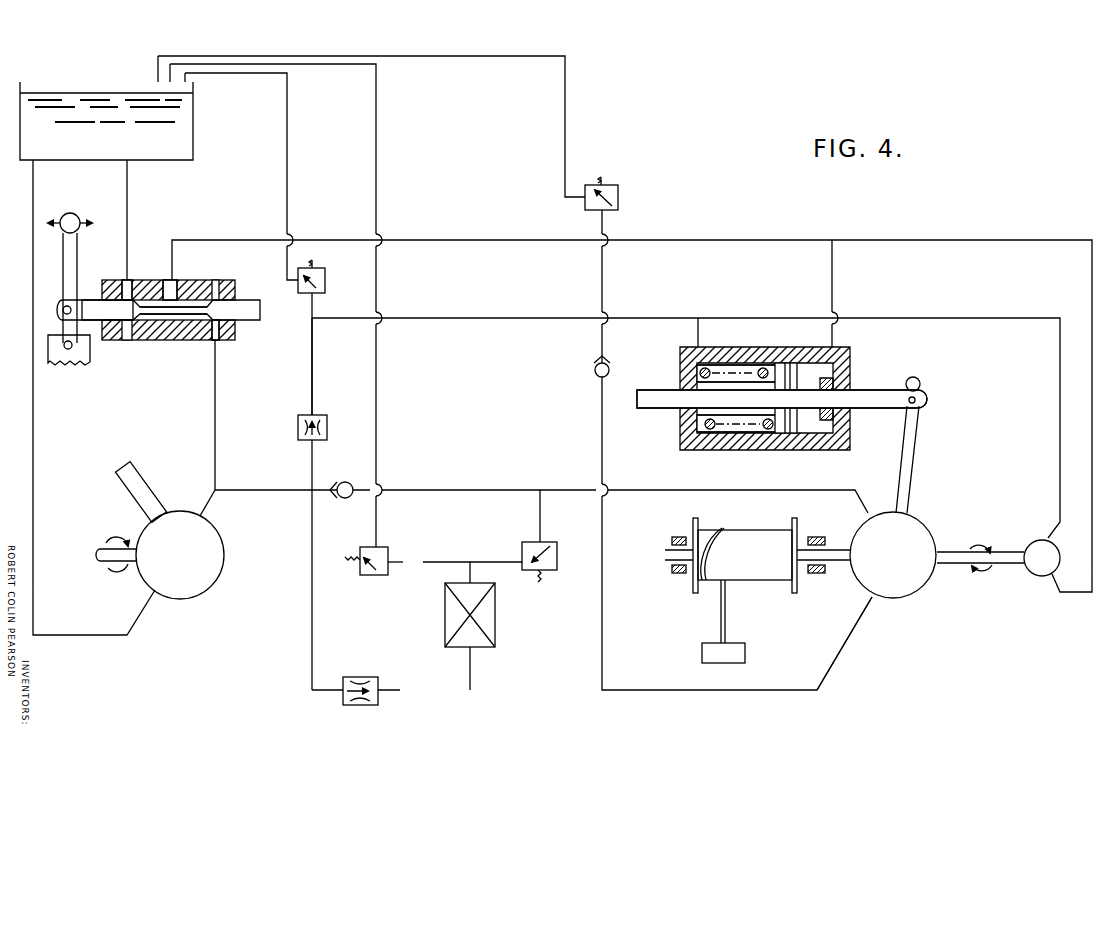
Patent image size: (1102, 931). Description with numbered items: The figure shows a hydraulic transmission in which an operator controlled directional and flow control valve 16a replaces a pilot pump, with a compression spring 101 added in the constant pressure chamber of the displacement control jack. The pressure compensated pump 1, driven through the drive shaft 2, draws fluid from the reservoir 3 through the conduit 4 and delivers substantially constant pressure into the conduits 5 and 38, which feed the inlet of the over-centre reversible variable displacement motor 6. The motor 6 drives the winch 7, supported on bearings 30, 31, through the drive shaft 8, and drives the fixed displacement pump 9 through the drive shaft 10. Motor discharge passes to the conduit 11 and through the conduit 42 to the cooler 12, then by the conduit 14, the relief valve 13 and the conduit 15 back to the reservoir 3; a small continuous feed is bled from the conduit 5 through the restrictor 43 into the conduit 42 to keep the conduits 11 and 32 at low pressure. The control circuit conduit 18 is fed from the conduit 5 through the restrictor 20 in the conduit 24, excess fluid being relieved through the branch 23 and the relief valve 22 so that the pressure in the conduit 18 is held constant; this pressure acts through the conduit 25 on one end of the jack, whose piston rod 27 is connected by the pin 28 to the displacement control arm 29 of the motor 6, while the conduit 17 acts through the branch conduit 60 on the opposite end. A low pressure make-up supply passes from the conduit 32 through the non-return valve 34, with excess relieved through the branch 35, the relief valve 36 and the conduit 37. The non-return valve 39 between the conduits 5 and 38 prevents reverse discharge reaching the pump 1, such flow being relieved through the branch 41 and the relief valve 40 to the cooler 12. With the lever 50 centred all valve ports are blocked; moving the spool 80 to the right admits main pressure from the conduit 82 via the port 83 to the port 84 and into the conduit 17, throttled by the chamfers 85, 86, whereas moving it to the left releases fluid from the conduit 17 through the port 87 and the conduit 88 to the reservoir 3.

The pump 1 is at (205, 572).
The drive shaft 2 is at (100, 548).
The reservoir 3 is at (194, 133).
The conduit 4 is at (34, 436).
The conduit 5 is at (262, 489).
The variable displacement motor 6 is at (928, 533).
The winch 7 is at (748, 540).
The drive shaft 8 is at (838, 566).
The pump 9 is at (1036, 574).
The drive shaft 10 is at (1004, 551).
The conduit 11 is at (838, 653).
The cooler 12 is at (496, 626).
The relief valve 13 is at (382, 578).
The conduit 14 is at (448, 546).
The conduit 15 is at (377, 372).
The directional and flow control valve 16a is at (220, 282).
The conduit 17 is at (1000, 243).
The conduit 18 is at (447, 318).
The restrictor 20 is at (297, 428).
The relief valve 22 is at (326, 279).
The branch 23 is at (313, 306).
The conduit 24 is at (313, 373).
The conduit 25 is at (697, 332).
The piston rod 27 is at (866, 395).
The pin 28 is at (920, 392).
The displacement control arm 29 is at (912, 462).
The bearing 30 is at (676, 536).
The bearing 31 is at (813, 537).
The conduit 32 is at (603, 636).
The non-return valve 34 is at (594, 370).
The branch 35 is at (603, 222).
The relief valve 36 is at (619, 193).
The conduit 37 is at (566, 140).
The conduit 38 is at (428, 492).
The non-return valve 39 is at (346, 499).
The relief valve 40 is at (546, 566).
The branch 41 is at (541, 516).
The conduit 42 is at (471, 668).
The restrictor 43 is at (368, 665).
The lever 50 is at (78, 216).
The branch conduit 60 is at (834, 346).
The spool 80 is at (252, 318).
The conduit 82 is at (214, 410).
The port 83 is at (217, 340).
The port 84 is at (173, 282).
The chamfer 85 is at (210, 309).
The chamfer 86 is at (137, 318).
The port 87 is at (129, 282).
The conduit 88 is at (128, 212).
The compression spring 101 is at (765, 366).